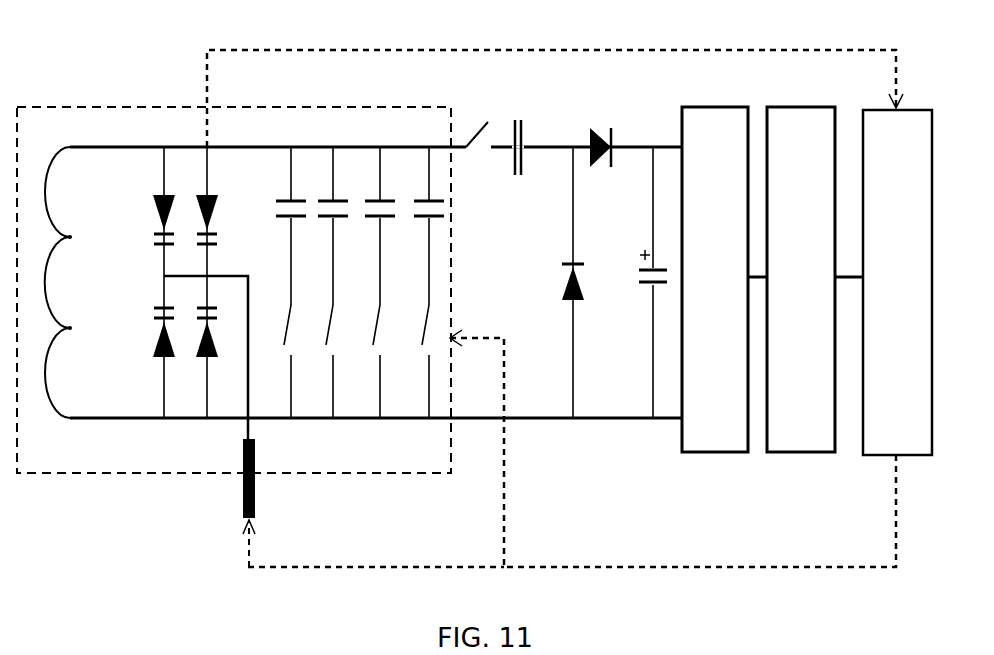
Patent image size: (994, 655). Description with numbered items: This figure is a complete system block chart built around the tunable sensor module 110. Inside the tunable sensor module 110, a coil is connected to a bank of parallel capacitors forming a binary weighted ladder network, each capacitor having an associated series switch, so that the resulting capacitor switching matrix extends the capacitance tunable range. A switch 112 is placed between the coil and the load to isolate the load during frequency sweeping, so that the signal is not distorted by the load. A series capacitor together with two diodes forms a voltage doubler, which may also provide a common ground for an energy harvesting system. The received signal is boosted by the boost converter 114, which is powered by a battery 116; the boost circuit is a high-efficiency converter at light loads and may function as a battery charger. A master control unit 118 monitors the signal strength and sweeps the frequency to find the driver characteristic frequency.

The tunable sensor module 110 is at (80, 107).
The switch 112 is at (470, 142).
The boost converter 114 is at (705, 107).
The battery 116 is at (805, 107).
The master control unit 118 is at (912, 110).